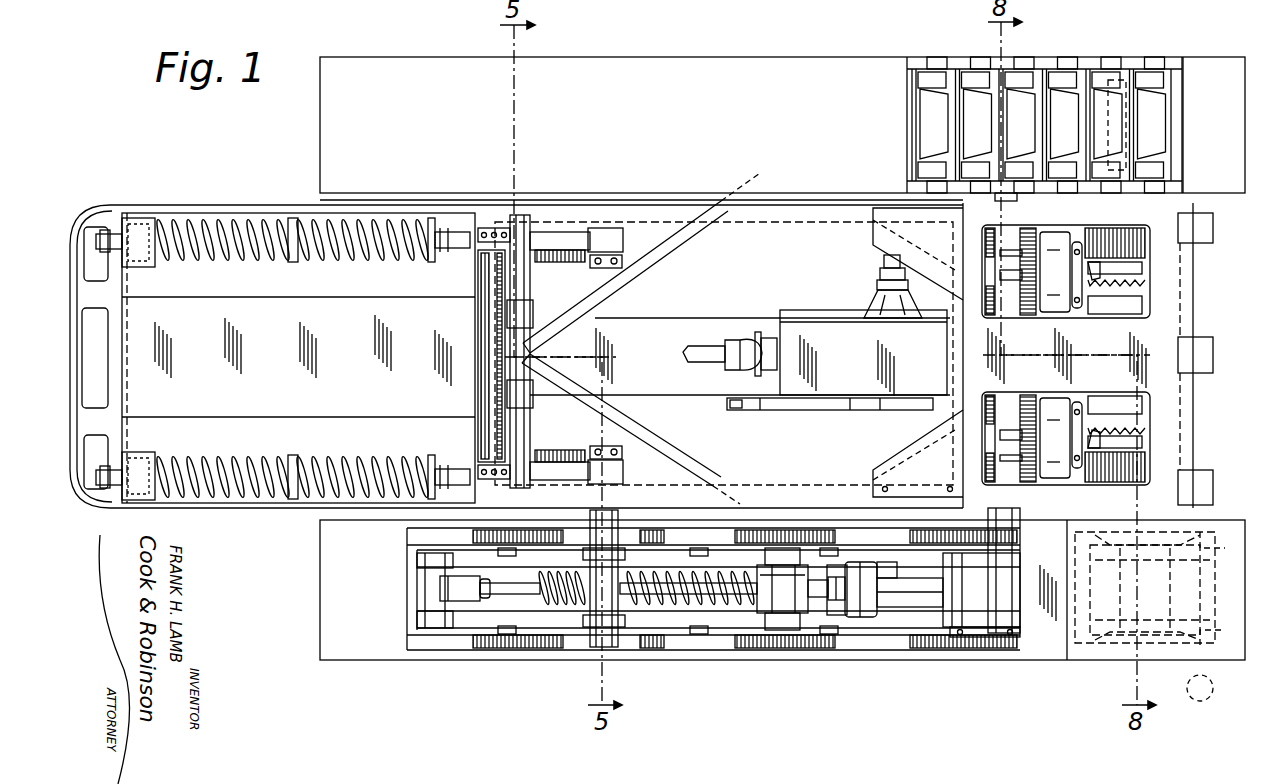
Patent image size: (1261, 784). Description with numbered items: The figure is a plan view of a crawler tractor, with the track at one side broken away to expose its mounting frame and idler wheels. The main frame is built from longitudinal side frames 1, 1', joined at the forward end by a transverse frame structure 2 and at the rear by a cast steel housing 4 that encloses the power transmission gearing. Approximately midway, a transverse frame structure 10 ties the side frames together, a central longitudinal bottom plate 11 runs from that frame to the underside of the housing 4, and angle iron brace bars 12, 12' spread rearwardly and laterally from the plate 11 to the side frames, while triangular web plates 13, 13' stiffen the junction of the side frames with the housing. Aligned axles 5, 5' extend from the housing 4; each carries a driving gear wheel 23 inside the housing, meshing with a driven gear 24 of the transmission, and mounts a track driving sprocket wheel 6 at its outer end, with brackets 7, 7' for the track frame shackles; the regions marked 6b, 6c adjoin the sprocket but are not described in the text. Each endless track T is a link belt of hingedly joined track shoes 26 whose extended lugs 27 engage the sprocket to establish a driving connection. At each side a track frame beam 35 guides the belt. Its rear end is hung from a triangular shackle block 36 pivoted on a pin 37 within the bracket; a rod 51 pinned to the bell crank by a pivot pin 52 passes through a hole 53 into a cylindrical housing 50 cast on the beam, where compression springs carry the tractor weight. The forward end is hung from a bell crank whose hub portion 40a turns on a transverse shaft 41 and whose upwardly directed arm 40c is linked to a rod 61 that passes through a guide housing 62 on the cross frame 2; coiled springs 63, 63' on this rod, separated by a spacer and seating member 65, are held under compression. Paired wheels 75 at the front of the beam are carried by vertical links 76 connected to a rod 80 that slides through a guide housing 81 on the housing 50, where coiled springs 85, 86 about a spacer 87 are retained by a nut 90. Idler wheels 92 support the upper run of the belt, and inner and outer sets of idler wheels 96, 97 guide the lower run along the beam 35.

The track T is at (320, 128).
The track shoes 26 is at (937, 97).
The extended lugs 27 is at (1115, 57).
The axle 5' is at (1190, 125).
The bracket 7' is at (1026, 208).
The driving gear wheel 23 is at (1088, 245).
The driven gears 24 is at (1150, 245).
The guide housing 62 is at (140, 267).
The coiled spring 63 is at (223, 358).
The spacer and seating member 65 is at (293, 262).
The coiled spring 63' is at (362, 358).
The rod 61 is at (458, 243).
The transverse frame structure 10 is at (475, 318).
The hub portion 40a is at (520, 282).
The upwardly directed arm 40c is at (478, 437).
The shaft 41 is at (540, 355).
The transverse frame structure 2 is at (113, 392).
The side frame 1' is at (772, 271).
The angle iron brace bar 12' is at (641, 263).
The central longitudinal bottom plate 11 is at (700, 322).
The triangular web plate 13' is at (891, 355).
The cast steel housing 4 is at (958, 350).
The angle iron brace bar 12 is at (631, 429).
The side frame 1 is at (740, 442).
The triangular web plate 13 is at (918, 453).
The guide housing 81 is at (778, 563).
The idler wheels 92 is at (815, 550).
The outer idler wheels 97 is at (622, 530).
The bracket 7 is at (1030, 560).
The paired wheels 75 is at (410, 540).
The vertically disposed links 76 is at (420, 560).
The rod 80 is at (505, 596).
The track frame beam 35 is at (520, 604).
The coiled spring 85 is at (560, 607).
The spacer 87 is at (648, 630).
The inner idler wheels 96 is at (672, 548).
The coiled spring 86 is at (706, 612).
The nut 90 is at (832, 603).
The cylindrical housing 50 is at (855, 612).
The pivot pin 52 is at (877, 620).
The rod 51 is at (912, 592).
The hole 53 is at (882, 565).
The triangular shackle block 36 is at (968, 630).
The pin 37 is at (1012, 640).
The axle 5 is at (1130, 590).
The wheel flange 6b is at (1204, 548).
The wheel flange 6c is at (1206, 640).
The track driving sprocket wheel 6 is at (1180, 635).